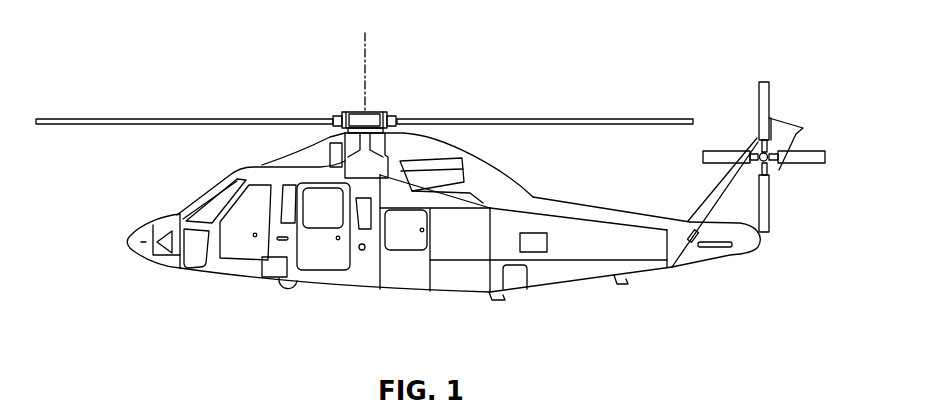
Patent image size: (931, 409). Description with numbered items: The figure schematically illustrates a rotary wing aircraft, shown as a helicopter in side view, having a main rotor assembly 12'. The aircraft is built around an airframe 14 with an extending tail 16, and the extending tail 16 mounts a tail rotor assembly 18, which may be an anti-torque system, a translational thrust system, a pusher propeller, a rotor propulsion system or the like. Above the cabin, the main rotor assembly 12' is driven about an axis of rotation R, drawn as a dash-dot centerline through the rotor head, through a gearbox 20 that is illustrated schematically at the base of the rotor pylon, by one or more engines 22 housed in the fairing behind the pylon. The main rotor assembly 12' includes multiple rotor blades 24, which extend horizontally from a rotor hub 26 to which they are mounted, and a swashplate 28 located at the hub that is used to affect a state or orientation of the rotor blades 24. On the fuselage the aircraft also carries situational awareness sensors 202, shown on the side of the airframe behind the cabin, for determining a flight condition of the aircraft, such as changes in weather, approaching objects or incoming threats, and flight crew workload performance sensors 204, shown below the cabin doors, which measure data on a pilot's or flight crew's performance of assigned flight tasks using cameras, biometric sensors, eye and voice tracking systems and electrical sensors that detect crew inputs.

The axis of rotation R is at (369, 53).
The main rotor assembly 12' is at (359, 85).
The airframe 14 is at (227, 270).
The extending tail 16 is at (637, 265).
The tail rotor assembly 18 is at (775, 105).
The gearbox 20 is at (357, 163).
The engine 22 is at (458, 178).
The rotor blade 24 is at (482, 118).
The rotor hub 26 is at (362, 114).
The swashplate 28 is at (386, 114).
The situational awareness sensor 202 is at (537, 252).
The flight crew workload performance sensor 204 is at (276, 279).